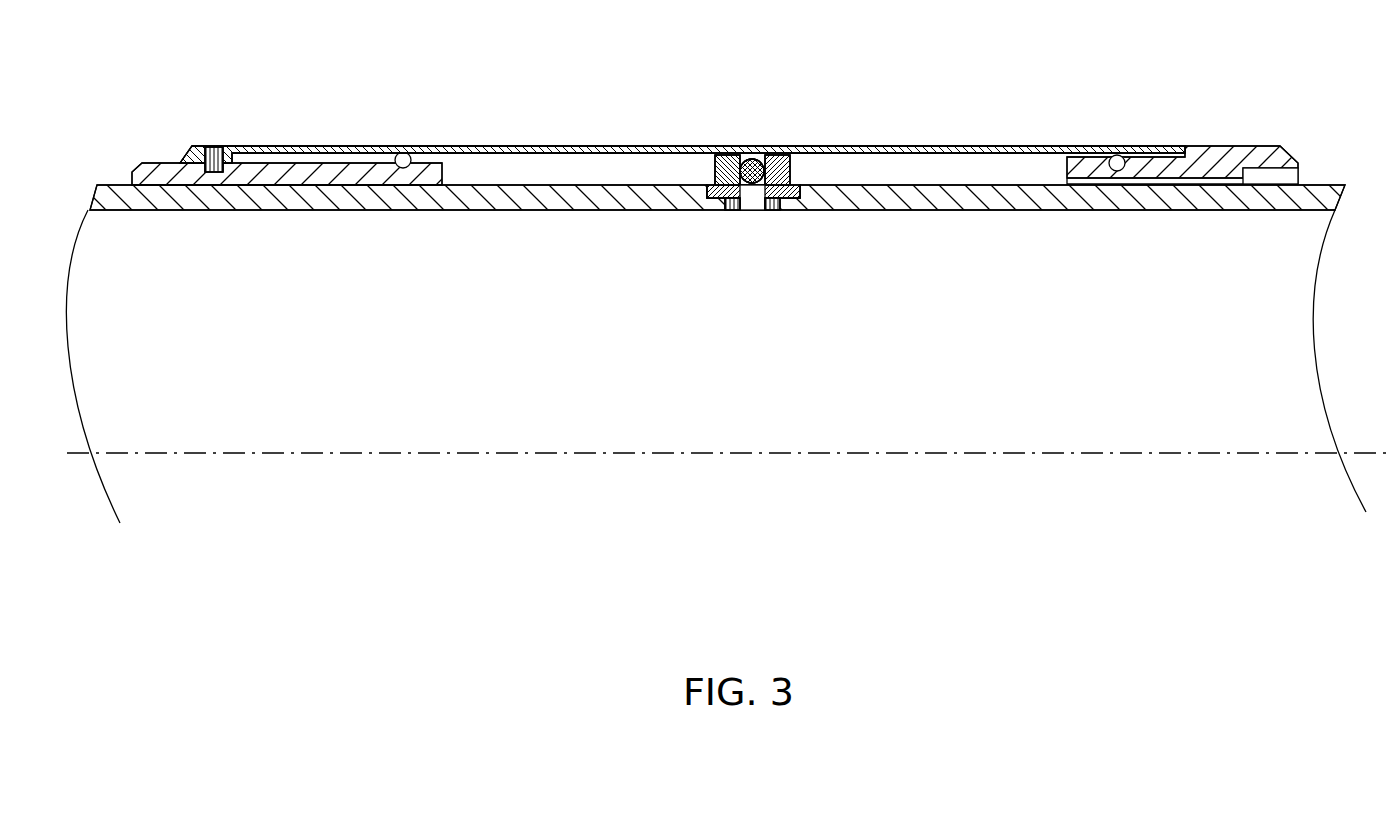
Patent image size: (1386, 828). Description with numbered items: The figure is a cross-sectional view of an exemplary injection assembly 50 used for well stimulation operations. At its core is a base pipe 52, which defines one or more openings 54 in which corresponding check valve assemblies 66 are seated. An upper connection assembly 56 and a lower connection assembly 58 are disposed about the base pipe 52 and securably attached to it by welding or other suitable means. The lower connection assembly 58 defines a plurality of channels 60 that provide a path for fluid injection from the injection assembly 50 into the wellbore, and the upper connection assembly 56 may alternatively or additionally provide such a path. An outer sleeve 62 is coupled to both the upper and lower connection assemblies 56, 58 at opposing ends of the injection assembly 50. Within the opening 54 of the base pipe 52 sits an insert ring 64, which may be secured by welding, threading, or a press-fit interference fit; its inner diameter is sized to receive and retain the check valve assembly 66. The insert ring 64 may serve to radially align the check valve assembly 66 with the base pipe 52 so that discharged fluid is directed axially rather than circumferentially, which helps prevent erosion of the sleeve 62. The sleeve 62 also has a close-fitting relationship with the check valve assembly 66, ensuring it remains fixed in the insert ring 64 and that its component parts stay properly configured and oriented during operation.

The injection assembly 50 is at (726, 292).
The base pipe 52 is at (960, 204).
The opening 54 is at (773, 208).
The upper connection assembly 56 is at (422, 186).
The lower connection assembly 58 is at (1198, 170).
The channel 60 is at (1128, 183).
The outer sleeve 62 is at (533, 145).
The insert ring 64 is at (727, 208).
The check valve assembly 66 is at (782, 202).